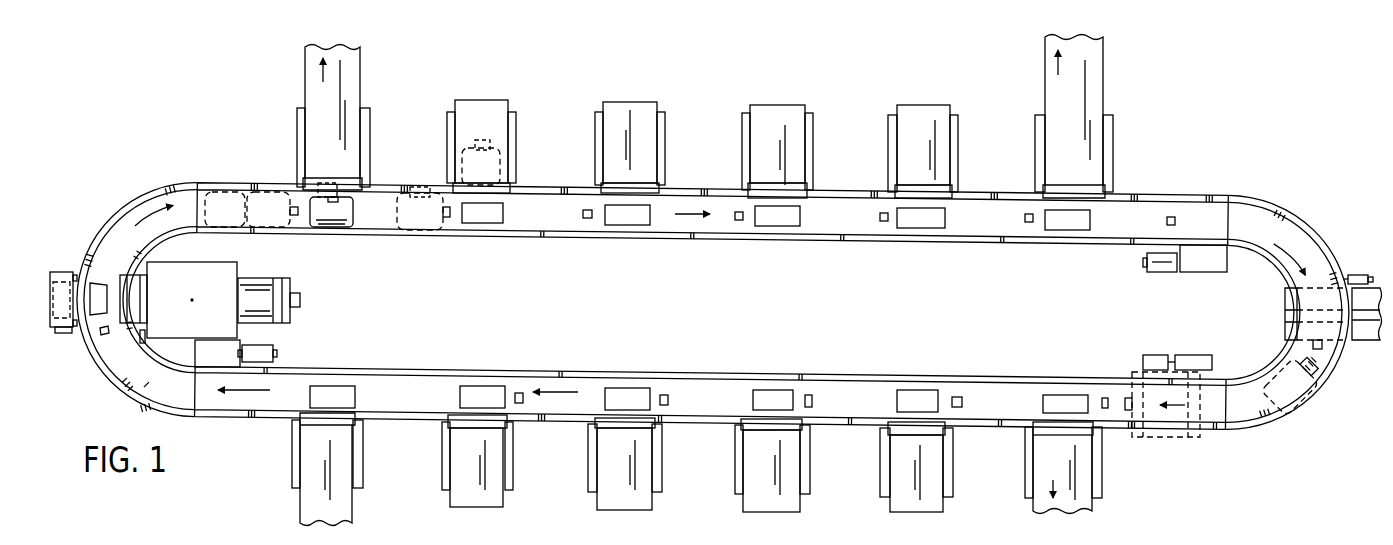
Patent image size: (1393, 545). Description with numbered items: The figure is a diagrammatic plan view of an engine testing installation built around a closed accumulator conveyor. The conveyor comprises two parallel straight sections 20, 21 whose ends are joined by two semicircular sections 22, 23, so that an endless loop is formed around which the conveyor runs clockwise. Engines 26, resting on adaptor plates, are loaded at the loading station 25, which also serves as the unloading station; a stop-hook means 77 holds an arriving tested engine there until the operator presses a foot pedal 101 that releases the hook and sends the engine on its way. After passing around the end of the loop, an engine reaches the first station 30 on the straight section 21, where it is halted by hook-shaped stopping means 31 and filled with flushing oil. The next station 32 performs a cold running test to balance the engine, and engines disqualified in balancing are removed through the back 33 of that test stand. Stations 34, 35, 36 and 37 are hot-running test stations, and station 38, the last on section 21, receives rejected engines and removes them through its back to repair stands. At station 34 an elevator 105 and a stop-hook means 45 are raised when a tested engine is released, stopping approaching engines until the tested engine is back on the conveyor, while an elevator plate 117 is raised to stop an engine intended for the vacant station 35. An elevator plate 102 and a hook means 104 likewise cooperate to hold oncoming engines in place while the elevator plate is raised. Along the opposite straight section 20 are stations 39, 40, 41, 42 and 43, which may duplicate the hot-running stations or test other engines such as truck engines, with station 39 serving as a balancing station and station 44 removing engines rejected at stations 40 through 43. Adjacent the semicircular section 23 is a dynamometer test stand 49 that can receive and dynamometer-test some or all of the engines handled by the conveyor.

The straight section 20 is at (571, 240).
The straight section 21 is at (251, 426).
The semicircular section 22 is at (1278, 199).
The semicircular section 23 is at (139, 182).
The loading station 25 is at (1367, 340).
The engine 26 is at (1312, 402).
The first station 30 is at (1159, 423).
The stopping means 31 is at (1128, 397).
The station 32 is at (1090, 464).
The back of the test stand 33 is at (1081, 509).
The station 34 is at (940, 465).
The station 35 is at (791, 469).
The station 36 is at (650, 467).
The station 37 is at (498, 463).
The station 38 is at (301, 505).
The station 39 is at (300, 139).
The station 40 is at (448, 134).
The station 41 is at (598, 134).
The station 42 is at (742, 136).
The station 43 is at (890, 138).
The station 44 is at (1034, 141).
The stop-hook means 45 is at (959, 397).
The test stand 49 is at (244, 264).
The stop-hook means 77 is at (1312, 344).
The foot pedal 101 is at (1358, 275).
The elevator plate 102 is at (1057, 399).
The hook means 104 is at (1105, 397).
The elevator 105 is at (916, 395).
The elevator plate 117 is at (776, 394).